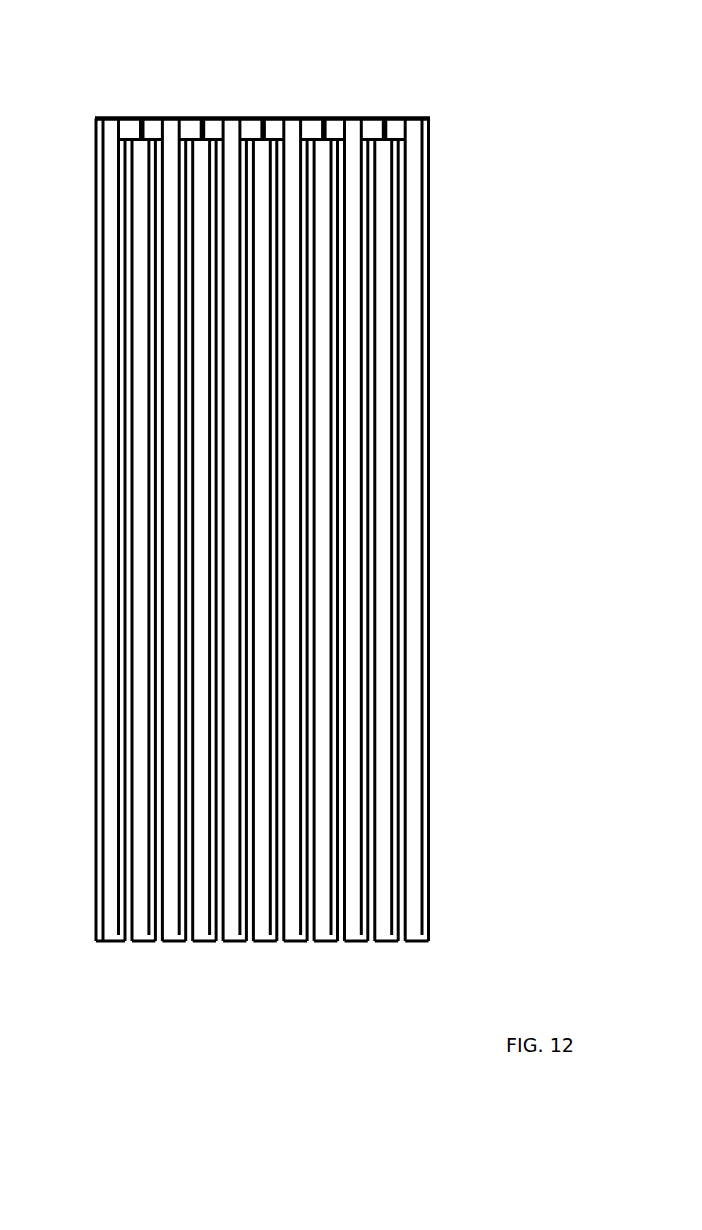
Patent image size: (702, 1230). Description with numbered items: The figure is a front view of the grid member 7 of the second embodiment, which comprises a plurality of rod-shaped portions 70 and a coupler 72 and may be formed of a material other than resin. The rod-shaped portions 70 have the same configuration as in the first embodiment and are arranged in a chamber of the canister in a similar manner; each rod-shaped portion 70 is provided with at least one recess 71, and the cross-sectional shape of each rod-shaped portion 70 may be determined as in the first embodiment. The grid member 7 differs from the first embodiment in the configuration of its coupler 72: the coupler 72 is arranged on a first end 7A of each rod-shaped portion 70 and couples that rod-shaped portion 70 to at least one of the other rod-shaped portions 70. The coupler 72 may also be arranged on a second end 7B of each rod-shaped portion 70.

The grid member 7 is at (285, 536).
The first end 7A is at (103, 93).
The second end 7B is at (155, 993).
The rod-shaped portion 70 is at (275, 536).
The recess 71 is at (430, 462).
The coupler 72 is at (143, 105).